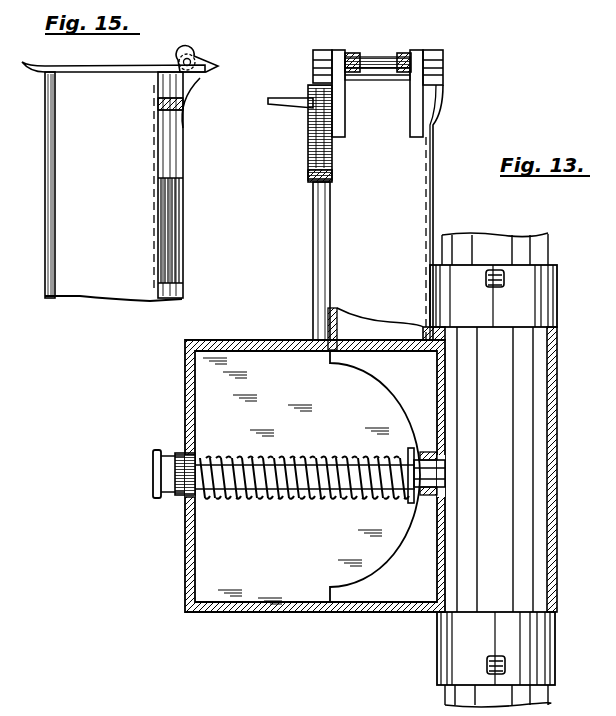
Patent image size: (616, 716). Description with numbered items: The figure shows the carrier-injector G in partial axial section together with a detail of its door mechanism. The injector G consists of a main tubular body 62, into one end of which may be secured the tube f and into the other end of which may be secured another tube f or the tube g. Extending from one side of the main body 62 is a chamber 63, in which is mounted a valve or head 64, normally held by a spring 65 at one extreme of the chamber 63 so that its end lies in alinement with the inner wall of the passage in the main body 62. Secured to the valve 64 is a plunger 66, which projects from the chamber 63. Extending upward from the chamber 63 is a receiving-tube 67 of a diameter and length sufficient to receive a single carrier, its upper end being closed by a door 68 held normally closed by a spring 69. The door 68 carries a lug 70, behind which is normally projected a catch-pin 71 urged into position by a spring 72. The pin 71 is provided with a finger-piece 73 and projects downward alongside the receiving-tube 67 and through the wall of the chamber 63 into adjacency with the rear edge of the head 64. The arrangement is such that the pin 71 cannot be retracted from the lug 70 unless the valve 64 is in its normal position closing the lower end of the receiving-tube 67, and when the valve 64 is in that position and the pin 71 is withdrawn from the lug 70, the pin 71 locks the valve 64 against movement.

In FIG. 13, the main tubular body 62 is at (548, 310).
In FIG. 13, the chamber 63 is at (215, 562).
In FIG. 13, the valve or head 64 is at (413, 580).
In FIG. 13, the spring 65 is at (296, 463).
In FIG. 13, the plunger 66 is at (170, 497).
In FIG. 15, the receiving-tube 67 is at (67, 220).
In FIG. 13, the receiving-tube 67 is at (360, 277).
In FIG. 15, the door 68 is at (118, 66).
In FIG. 13, the door 68 is at (375, 65).
In FIG. 13, the spring 69 is at (349, 56).
In FIG. 15, the lug 70 is at (200, 70).
In FIG. 13, the lug 70 is at (322, 66).
In FIG. 15, the catch-pin 71 is at (163, 86).
In FIG. 13, the catch-pin 71 is at (320, 218).
In FIG. 13, the spring 72 is at (314, 158).
In FIG. 15, the finger-piece 73 is at (184, 116).
In FIG. 13, the finger-piece 73 is at (298, 103).
In FIG. 13, the tube f is at (519, 250).
In FIG. 13, the tube g is at (446, 690).
In FIG. 15, the injector G is at (103, 235).
In FIG. 13, the injector G is at (574, 288).